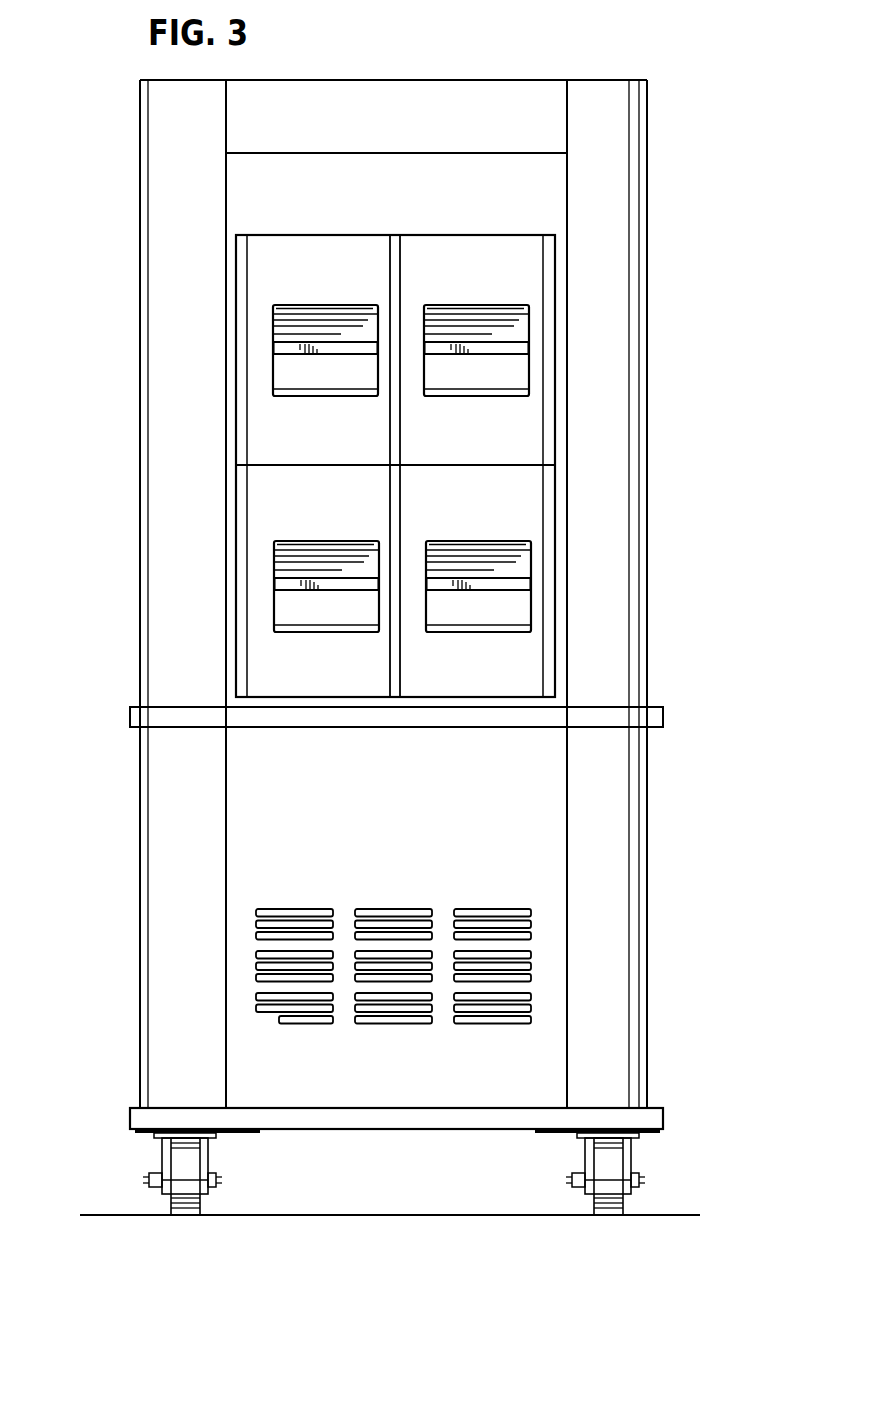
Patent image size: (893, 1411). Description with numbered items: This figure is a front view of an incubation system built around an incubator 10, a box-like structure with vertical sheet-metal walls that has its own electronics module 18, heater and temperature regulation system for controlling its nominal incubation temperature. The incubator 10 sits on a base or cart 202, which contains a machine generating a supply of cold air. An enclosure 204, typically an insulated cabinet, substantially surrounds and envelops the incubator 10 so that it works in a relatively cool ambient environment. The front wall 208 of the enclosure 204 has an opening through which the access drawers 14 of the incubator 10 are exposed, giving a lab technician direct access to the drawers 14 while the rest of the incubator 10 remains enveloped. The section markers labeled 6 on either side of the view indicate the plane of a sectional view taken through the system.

The incubator 10 is at (506, 654).
The drawers 14 is at (510, 442).
The electronics module 18 is at (540, 203).
The base or cart 202 is at (140, 897).
The enclosure 204 is at (140, 575).
The front wall 208 is at (610, 572).
The section line 6- 6 is at (125, 323).